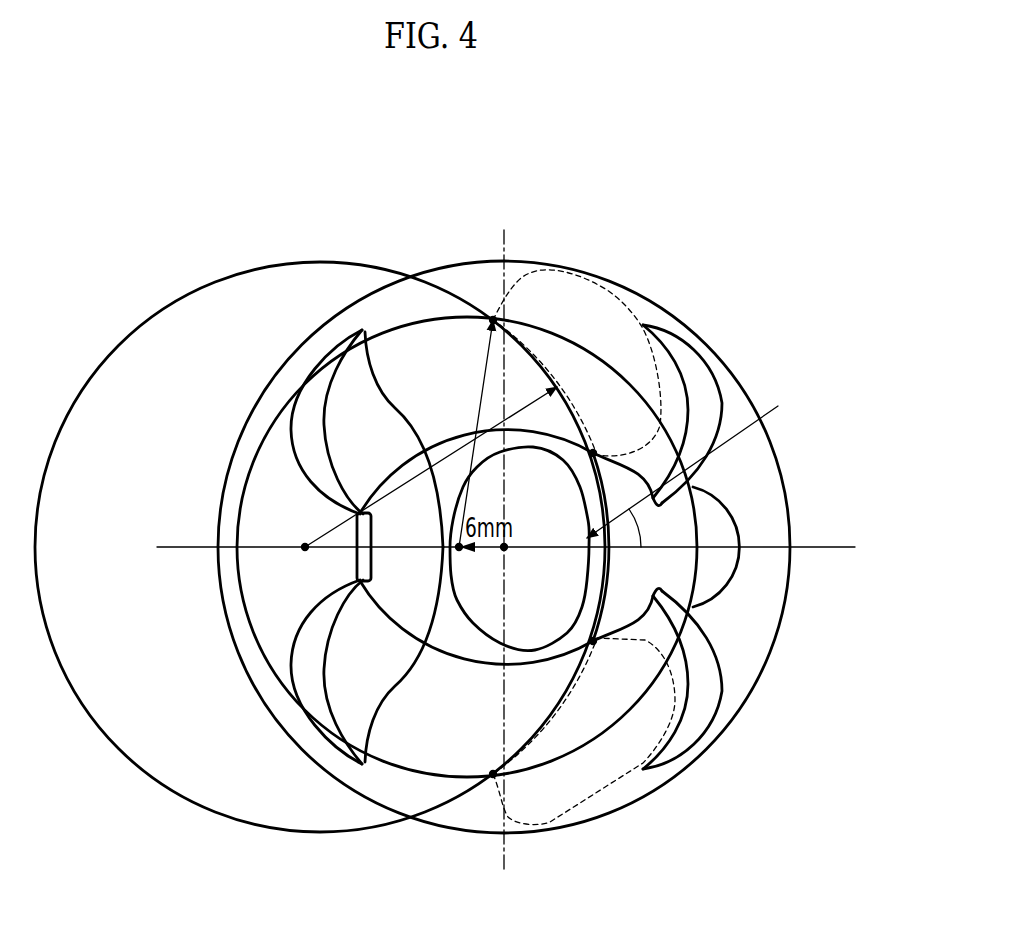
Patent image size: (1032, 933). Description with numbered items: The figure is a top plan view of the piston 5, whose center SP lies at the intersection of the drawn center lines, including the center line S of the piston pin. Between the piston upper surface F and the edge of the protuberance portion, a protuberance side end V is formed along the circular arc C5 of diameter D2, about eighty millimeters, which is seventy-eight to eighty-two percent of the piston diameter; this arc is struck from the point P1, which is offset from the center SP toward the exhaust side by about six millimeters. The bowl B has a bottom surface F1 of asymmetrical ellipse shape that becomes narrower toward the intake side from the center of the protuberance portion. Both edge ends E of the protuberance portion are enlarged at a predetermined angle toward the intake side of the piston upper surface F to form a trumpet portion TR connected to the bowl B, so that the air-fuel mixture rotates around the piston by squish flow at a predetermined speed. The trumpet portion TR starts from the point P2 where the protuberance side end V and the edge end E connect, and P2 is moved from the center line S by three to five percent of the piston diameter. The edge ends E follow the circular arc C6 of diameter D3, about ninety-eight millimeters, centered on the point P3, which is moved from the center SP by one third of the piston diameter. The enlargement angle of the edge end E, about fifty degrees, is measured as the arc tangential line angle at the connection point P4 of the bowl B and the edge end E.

The circular arc C5 is at (330, 358).
The circular arc C6 is at (367, 266).
The protuberance side end V is at (437, 314).
The point P2 is at (493, 316).
The edge end E is at (542, 351).
The trumpet portion TR is at (625, 300).
The connection point P4 is at (597, 446).
The piston 5 is at (765, 407).
The bowl B is at (683, 466).
The piston upper surface F is at (760, 493).
The bottom surface F1 is at (625, 578).
The diameter D2 is at (471, 433).
The diameter D3 is at (476, 547).
The point P3 is at (302, 556).
The point P1 is at (456, 558).
The center SP is at (508, 553).
The center line S is at (507, 643).